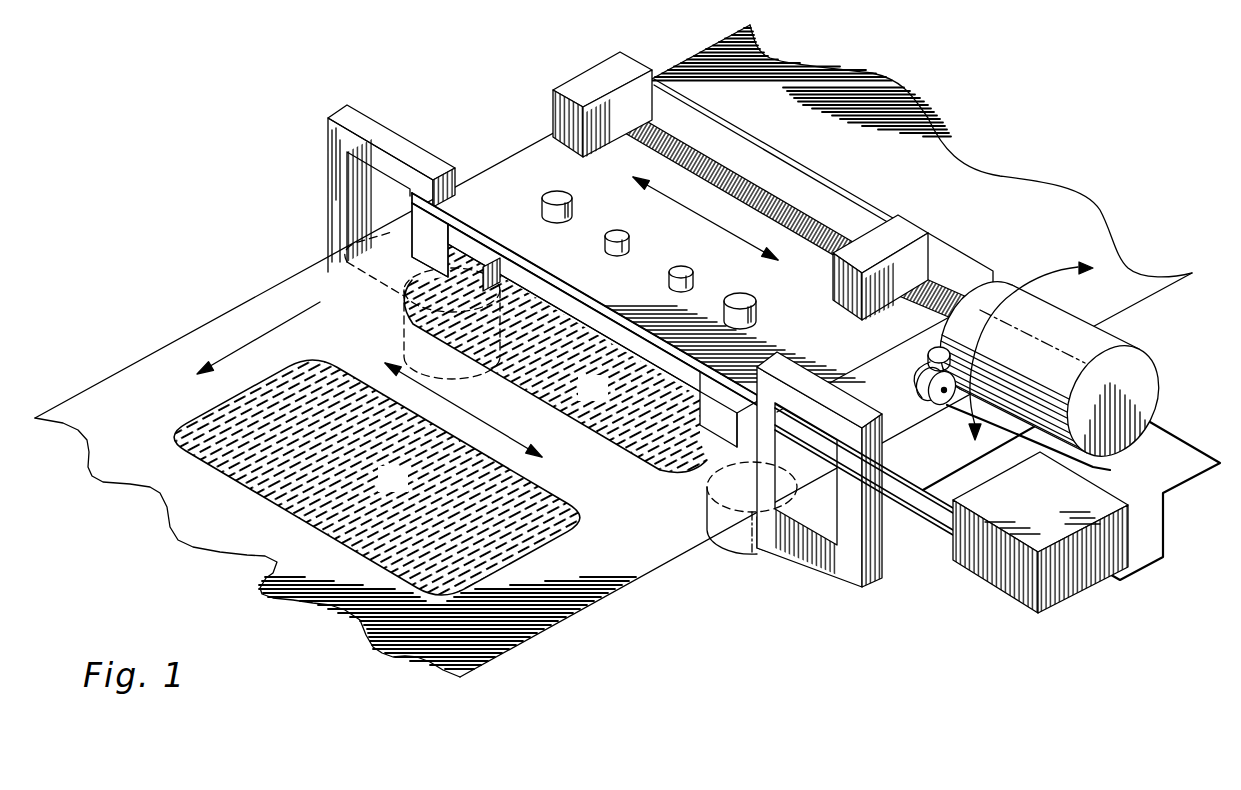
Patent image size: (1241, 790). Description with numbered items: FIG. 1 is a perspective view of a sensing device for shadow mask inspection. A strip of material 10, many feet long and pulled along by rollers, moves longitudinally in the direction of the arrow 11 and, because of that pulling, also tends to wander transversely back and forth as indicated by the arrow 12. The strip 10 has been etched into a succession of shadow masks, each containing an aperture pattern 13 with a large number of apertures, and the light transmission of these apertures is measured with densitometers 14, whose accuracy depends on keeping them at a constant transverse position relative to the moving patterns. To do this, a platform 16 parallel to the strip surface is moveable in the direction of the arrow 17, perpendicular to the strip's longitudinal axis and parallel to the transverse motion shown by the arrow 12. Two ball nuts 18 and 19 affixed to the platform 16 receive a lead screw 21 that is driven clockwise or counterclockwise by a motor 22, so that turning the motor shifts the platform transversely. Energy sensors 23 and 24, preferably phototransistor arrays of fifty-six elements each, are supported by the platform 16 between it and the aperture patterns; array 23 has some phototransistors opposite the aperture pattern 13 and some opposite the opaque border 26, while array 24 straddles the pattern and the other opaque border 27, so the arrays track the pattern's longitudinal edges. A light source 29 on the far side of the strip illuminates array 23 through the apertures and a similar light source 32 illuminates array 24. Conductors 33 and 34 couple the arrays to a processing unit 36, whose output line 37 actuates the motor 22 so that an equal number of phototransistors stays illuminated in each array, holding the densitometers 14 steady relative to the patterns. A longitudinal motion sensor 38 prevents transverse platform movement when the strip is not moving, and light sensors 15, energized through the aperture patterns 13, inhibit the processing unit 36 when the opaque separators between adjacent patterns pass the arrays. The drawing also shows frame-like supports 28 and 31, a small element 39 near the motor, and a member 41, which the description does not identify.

The strip of material 10 is at (870, 72).
The arrow 11 is at (260, 333).
The arrow 12 is at (480, 420).
The aperture pattern 13 is at (404, 492).
The densitometers 14 is at (572, 215).
The light sensors 15 is at (682, 266).
The platform 16 is at (750, 140).
The arrow 17 is at (716, 227).
The ball nut 18 is at (597, 63).
The ball nut 19 is at (913, 230).
The lead screw 21 is at (787, 193).
The motor 22 is at (1147, 357).
The energy sensor 23 is at (350, 285).
The energy sensor 24 is at (800, 455).
The opaque border 26 is at (364, 329).
The opaque border 27 is at (657, 547).
The frame 28 is at (330, 152).
The light source 29 is at (404, 349).
The frame 31 is at (873, 582).
The light source 32 is at (733, 545).
The conductor 33 is at (897, 477).
The conductor 34 is at (921, 515).
The processing unit 36 is at (1049, 520).
The output line 37 is at (1183, 487).
The longitudinal motion sensor 38 is at (945, 405).
The pulley 39 is at (928, 352).
The belt 41 is at (1110, 470).